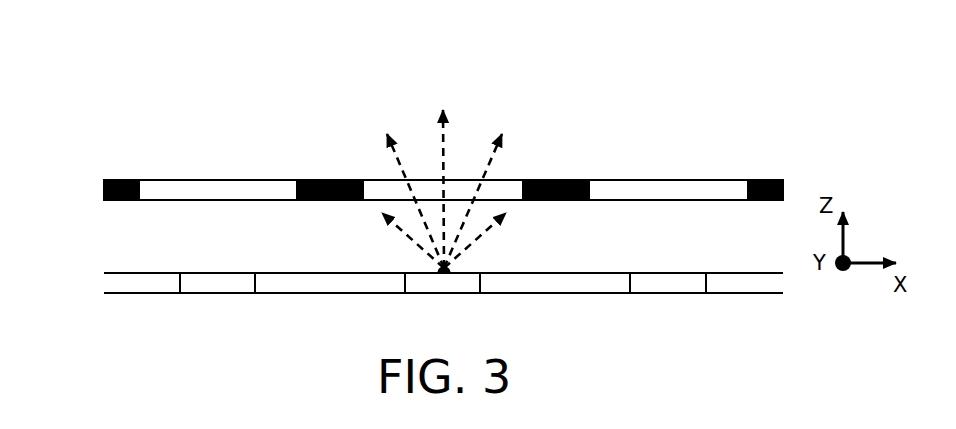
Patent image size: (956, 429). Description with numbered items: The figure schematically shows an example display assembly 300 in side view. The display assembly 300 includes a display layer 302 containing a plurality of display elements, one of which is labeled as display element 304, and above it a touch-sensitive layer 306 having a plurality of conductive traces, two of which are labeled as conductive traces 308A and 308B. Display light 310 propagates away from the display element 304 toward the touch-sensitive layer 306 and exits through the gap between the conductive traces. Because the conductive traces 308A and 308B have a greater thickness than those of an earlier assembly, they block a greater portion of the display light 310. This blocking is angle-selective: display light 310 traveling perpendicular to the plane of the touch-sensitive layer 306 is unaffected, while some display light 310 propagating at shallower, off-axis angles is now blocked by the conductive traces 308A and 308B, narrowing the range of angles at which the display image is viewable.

The display assembly 300 is at (236, 136).
The substrate / lower plate 302 is at (91, 284).
The display element 304 is at (420, 295).
The touch-sensitive layer 306 is at (409, 188).
The conductive trace 308A is at (335, 202).
The conductive trace 308B is at (558, 201).
The display light 310 is at (388, 240).